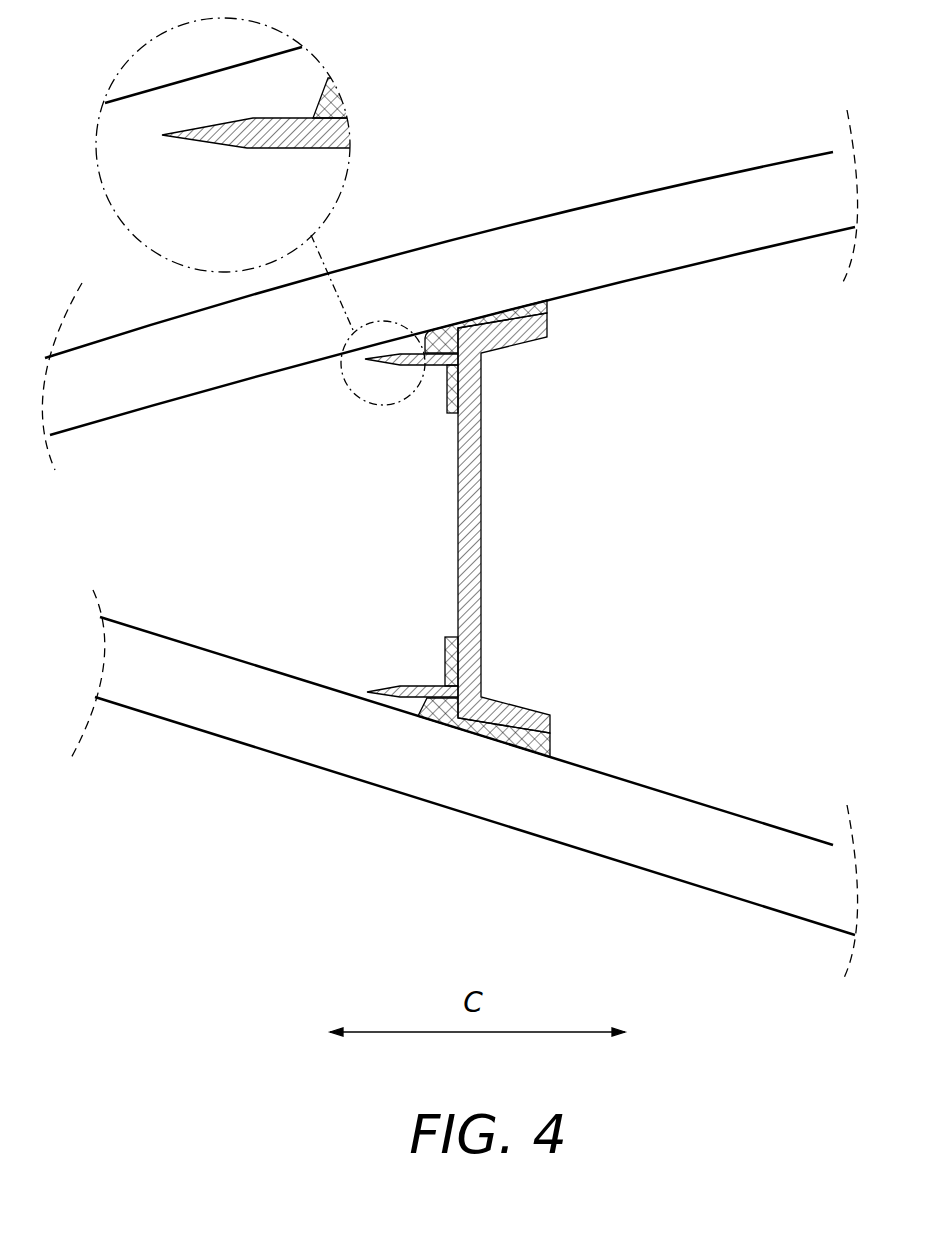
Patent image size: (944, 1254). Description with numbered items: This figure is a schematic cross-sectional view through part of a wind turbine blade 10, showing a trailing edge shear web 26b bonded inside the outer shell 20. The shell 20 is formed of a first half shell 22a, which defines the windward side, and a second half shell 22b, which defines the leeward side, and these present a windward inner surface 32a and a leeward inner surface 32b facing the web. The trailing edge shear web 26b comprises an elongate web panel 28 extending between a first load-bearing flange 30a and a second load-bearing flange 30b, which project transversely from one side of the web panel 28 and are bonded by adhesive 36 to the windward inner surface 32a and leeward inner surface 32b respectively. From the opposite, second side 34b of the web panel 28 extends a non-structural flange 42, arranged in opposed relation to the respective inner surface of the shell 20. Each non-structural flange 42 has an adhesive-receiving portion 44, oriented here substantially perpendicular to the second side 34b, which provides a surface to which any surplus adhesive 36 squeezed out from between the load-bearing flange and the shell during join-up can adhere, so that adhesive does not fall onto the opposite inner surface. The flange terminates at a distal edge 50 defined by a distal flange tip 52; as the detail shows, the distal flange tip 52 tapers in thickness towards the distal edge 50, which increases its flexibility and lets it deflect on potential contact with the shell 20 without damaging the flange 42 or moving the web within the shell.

The wind turbine blade 10 is at (416, 106).
The outer shell 20 is at (462, 215).
The first half shell 22a is at (576, 242).
The second half shell 22b is at (540, 812).
The trailing edge shear web 26b is at (550, 521).
The web panel 28 is at (458, 553).
The first load-bearing flange 30a is at (532, 360).
The second load-bearing flange 30b is at (516, 682).
The windward inner surface 32a is at (176, 400).
The leeward inner surface 32b is at (261, 664).
The second side of the web panel 34b is at (456, 498).
The adhesive 36 is at (552, 306).
The non-structural flange 42 is at (426, 399).
The adhesive-receiving portion 44 is at (425, 365).
The distal edge 50 is at (362, 361).
The distal flange tip 52 is at (235, 158).